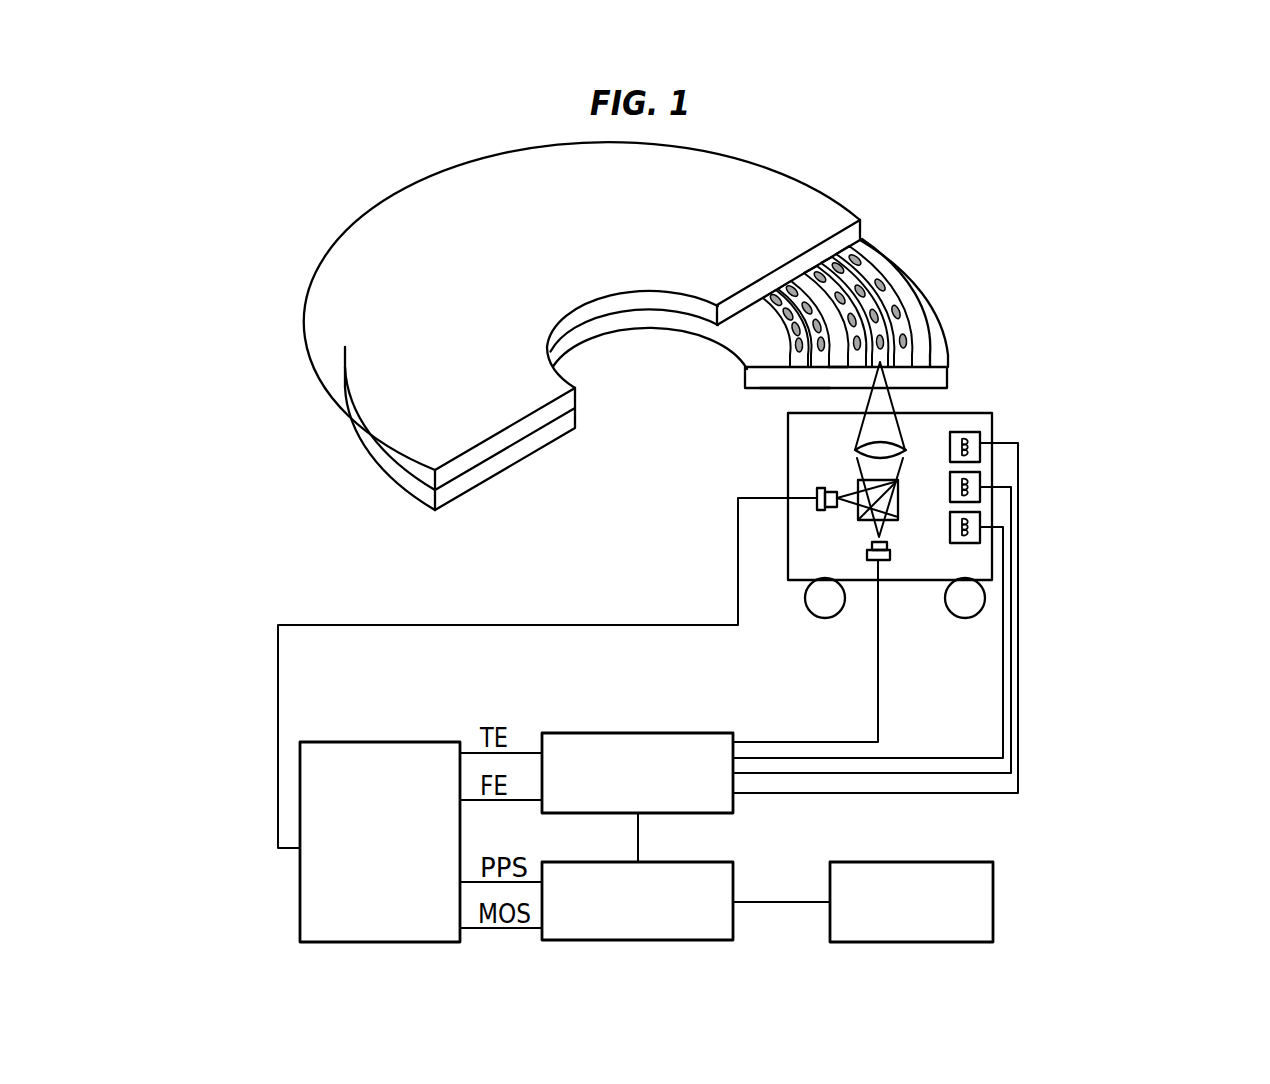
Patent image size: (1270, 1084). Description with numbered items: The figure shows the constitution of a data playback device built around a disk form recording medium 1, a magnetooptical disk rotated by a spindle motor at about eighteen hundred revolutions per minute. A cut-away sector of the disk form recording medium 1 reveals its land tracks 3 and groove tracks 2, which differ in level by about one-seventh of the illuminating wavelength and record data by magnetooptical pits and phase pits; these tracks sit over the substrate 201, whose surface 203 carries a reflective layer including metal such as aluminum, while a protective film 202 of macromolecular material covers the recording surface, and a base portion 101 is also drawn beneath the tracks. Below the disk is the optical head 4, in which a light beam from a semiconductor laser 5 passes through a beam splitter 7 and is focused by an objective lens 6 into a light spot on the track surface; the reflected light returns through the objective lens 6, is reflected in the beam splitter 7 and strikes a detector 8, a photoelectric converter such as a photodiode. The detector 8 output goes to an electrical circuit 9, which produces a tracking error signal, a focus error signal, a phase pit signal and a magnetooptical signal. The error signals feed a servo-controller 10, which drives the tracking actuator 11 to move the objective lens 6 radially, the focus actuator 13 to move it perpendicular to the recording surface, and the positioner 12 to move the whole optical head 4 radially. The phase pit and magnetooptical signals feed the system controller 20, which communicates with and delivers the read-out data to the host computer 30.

The disk form recording medium 1 is at (752, 198).
The groove tracks 2 is at (840, 283).
The land tracks 3 is at (907, 312).
The substrate 101 is at (947, 380).
The substrate 201 is at (693, 303).
The protective film 202 is at (812, 362).
The surface of the substrate 203 is at (812, 382).
The optical head 4 is at (795, 440).
The semiconductor laser 5 is at (867, 554).
The objective lens 6 is at (856, 449).
The beam splitter 7 is at (898, 500).
The detector 8 is at (822, 510).
The electrical circuit 9 is at (405, 742).
The servo-controller 10 is at (675, 733).
The tracking actuator 11 is at (978, 476).
The positioner 12 is at (975, 547).
The focus actuator 13 is at (978, 428).
The system controller 20 is at (675, 862).
The host computer 30 is at (933, 862).